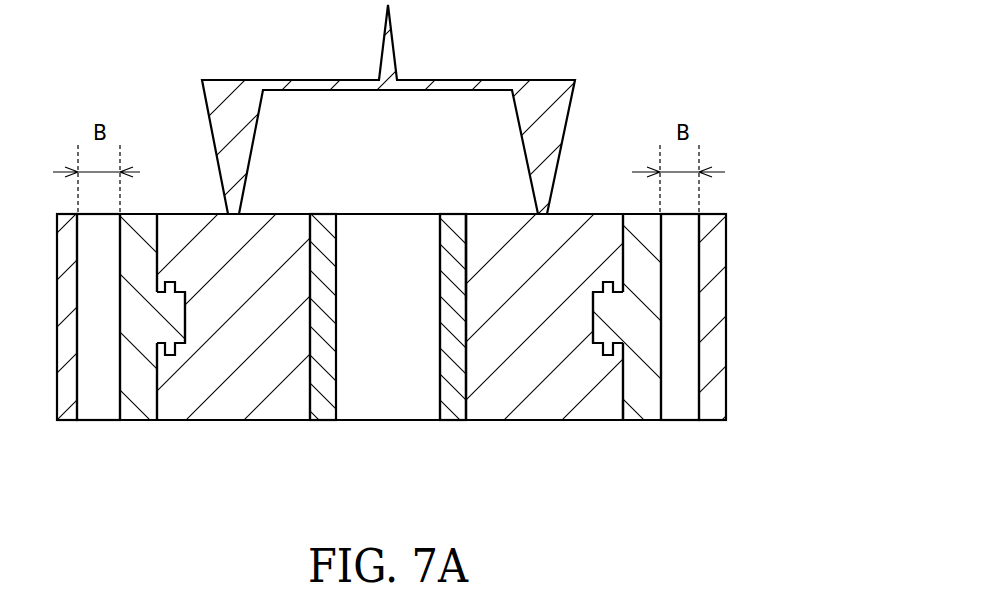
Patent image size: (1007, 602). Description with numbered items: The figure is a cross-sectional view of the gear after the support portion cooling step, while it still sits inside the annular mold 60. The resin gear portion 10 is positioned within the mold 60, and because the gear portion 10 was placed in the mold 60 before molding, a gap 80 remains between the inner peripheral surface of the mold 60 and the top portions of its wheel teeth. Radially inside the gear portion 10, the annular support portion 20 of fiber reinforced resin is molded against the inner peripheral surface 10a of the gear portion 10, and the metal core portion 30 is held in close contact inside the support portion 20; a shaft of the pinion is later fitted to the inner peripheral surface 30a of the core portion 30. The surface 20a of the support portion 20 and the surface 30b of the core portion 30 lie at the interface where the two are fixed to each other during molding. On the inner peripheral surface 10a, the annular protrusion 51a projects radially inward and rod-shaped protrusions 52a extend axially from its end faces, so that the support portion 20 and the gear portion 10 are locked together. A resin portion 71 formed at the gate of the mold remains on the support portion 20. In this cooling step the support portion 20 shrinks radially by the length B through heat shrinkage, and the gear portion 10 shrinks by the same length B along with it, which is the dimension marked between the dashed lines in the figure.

The resin portion 71 is at (213, 98).
The mold 60 is at (68, 392).
The gap 80 is at (102, 392).
The gear portion 10 is at (138, 392).
The inner peripheral surface 10a is at (622, 400).
The rod-shaped protrusions 52a is at (170, 281).
The annular protrusion 51a is at (185, 305).
The support portion 20 is at (258, 392).
The surface of core member 20a is at (465, 268).
The core portion 30 is at (323, 392).
The inner peripheral surface 30a is at (438, 253).
The outer surface of sleeve 30b is at (467, 248).